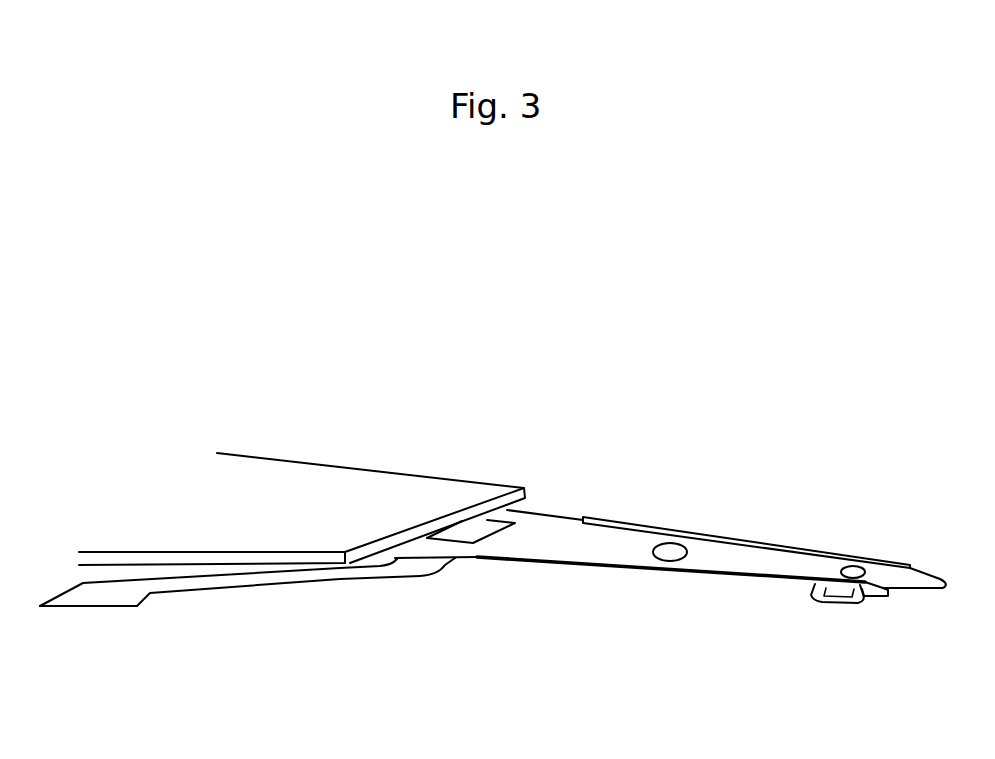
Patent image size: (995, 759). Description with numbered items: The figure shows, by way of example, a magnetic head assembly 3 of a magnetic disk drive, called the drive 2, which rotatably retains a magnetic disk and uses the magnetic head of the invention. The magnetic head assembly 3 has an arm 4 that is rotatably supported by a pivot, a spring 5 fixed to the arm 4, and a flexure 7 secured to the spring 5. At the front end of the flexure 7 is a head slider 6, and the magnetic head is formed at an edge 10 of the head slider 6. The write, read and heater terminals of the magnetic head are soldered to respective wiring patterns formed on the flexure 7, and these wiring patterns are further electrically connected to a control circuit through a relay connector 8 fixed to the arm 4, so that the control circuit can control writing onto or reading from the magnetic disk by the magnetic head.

The drive 2 is at (770, 233).
The magnetic head assembly 3 is at (542, 426).
The arm 4 is at (358, 492).
The spring 5 is at (622, 535).
The head slider 6 is at (875, 603).
The flexure 7 is at (830, 605).
The relay connector 8 is at (118, 592).
The edge 10 is at (890, 592).